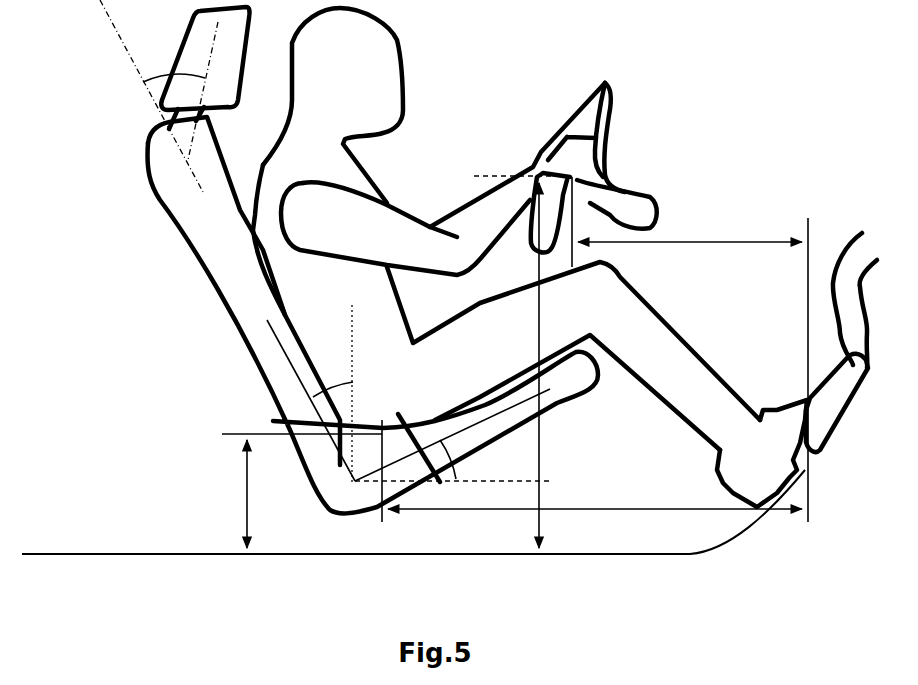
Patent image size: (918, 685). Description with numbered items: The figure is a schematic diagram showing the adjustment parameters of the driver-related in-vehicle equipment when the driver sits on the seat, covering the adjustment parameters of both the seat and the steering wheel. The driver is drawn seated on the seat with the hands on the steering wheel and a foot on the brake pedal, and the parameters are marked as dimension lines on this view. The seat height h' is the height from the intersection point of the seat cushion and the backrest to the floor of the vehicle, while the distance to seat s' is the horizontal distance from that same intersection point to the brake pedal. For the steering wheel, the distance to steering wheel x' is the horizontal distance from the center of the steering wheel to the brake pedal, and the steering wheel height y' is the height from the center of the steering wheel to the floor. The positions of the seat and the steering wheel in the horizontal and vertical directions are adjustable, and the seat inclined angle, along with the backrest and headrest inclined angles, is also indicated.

The seat height h' is at (234, 494).
The distance to seat s' is at (595, 498).
The distance to steering wheel x' is at (690, 230).
The steering wheel height y' is at (526, 365).